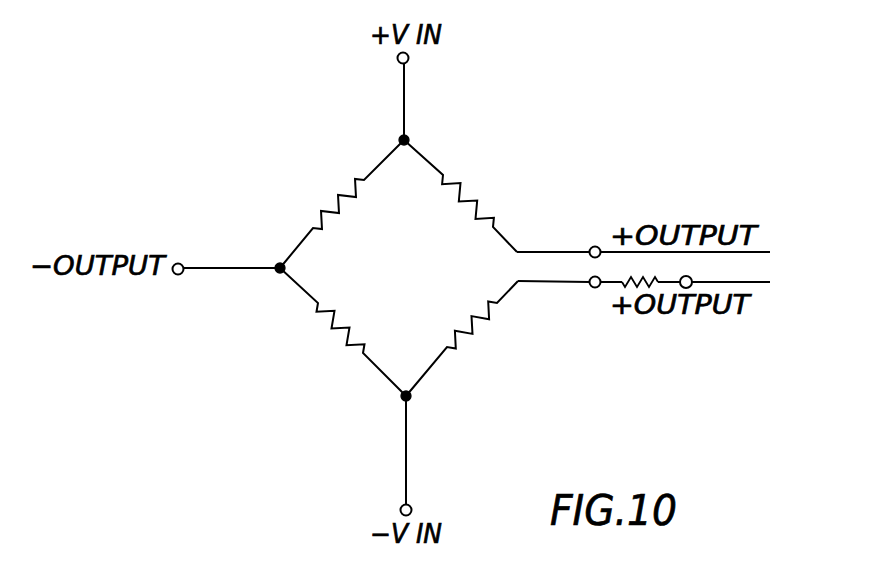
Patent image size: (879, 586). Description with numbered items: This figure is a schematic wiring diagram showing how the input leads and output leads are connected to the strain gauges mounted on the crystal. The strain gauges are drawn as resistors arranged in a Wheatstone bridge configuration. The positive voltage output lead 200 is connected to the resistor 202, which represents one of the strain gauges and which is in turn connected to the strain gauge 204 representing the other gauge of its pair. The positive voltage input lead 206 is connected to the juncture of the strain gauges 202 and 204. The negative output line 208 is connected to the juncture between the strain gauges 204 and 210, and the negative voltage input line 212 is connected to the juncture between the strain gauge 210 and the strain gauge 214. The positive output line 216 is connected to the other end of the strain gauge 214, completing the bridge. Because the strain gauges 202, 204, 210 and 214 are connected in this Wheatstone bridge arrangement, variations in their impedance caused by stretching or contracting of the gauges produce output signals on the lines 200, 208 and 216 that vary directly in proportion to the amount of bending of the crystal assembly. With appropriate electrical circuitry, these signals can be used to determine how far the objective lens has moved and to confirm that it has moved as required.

The positive voltage output lead 200 is at (548, 249).
The resistor 202 is at (456, 176).
The strain gauge 204 is at (346, 184).
The positive voltage input lead 206 is at (404, 88).
The negative output line 208 is at (210, 267).
The strain gauge 210 is at (341, 341).
The negative voltage input line 212 is at (406, 458).
The strain gauge 214 is at (473, 340).
The positive output line 216 is at (540, 283).